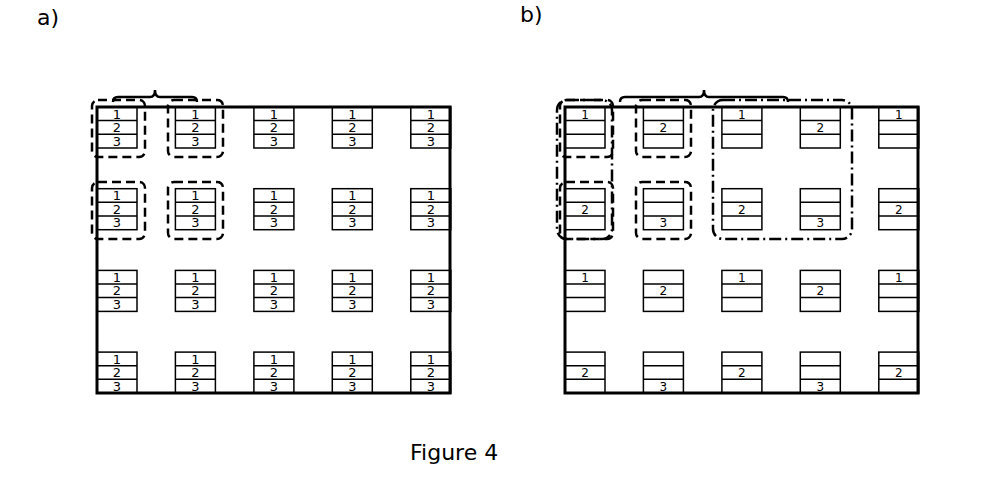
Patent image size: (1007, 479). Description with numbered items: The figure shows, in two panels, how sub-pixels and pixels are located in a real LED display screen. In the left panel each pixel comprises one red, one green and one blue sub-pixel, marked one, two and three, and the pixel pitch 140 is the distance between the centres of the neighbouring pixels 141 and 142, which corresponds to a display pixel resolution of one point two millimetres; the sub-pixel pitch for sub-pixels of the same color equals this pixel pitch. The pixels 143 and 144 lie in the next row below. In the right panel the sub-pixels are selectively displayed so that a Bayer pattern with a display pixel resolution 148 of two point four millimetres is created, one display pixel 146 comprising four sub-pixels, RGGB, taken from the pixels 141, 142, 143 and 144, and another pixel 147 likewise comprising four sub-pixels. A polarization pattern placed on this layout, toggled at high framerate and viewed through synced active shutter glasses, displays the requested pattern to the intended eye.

The pixel pitch 140 is at (157, 72).
The pixel 141 is at (93, 108).
The pixel 142 is at (209, 100).
The pixel 143 is at (93, 190).
The pixel 144 is at (178, 240).
The display pixel 146 is at (603, 97).
The pixel 147 is at (826, 100).
The display pixel resolution 148 is at (704, 92).